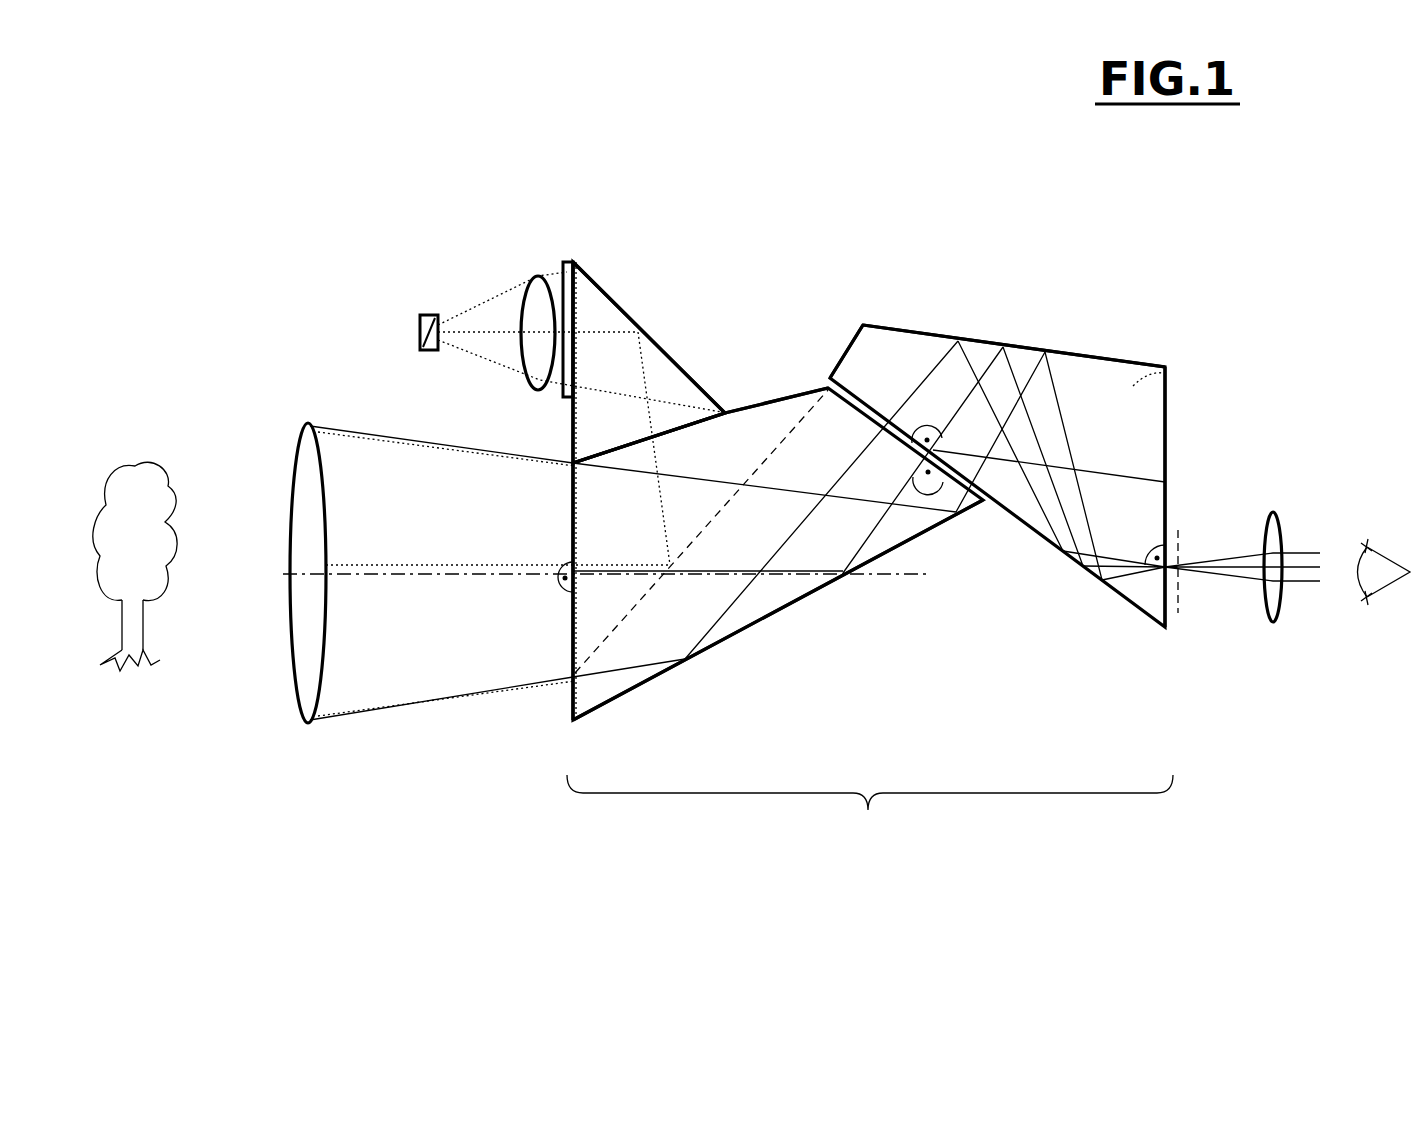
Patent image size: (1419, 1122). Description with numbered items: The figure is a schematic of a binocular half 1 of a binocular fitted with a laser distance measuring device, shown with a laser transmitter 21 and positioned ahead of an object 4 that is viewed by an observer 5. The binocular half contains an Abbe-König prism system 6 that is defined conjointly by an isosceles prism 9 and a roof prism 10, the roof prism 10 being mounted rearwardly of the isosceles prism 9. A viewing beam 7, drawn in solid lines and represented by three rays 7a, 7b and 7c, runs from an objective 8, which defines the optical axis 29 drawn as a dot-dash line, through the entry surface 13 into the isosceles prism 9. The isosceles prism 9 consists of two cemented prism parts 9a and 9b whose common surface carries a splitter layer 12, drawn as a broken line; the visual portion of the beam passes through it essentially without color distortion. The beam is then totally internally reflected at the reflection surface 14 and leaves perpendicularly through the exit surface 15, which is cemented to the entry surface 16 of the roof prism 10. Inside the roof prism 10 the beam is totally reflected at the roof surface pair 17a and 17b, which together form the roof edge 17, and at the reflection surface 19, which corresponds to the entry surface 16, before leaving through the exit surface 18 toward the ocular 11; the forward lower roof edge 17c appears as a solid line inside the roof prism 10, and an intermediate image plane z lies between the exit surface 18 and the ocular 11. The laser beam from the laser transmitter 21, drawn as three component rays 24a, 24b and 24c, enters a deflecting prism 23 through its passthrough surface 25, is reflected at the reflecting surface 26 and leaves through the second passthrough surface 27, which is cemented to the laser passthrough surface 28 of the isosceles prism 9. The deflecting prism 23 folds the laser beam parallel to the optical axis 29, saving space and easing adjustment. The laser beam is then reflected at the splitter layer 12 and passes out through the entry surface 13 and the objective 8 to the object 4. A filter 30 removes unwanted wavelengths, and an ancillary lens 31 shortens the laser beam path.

The binocular half 1 is at (806, 197).
The object 4 is at (134, 697).
The observer 5 is at (1388, 626).
The Abbe-König prism system 6 is at (870, 812).
The viewing beam 7 is at (305, 398).
The ray of the viewing beam 7a is at (350, 445).
The ray of the viewing beam 7b is at (384, 577).
The ray of the viewing beam 7c is at (467, 694).
The objective 8 is at (303, 658).
The isosceles prism 9 is at (786, 643).
The prism part 9a is at (770, 413).
The prism part 9b is at (833, 546).
The roof prism 10 is at (1140, 596).
The ocular 11 is at (1270, 606).
The splitter layer 12 is at (648, 598).
The entry surface 13 is at (573, 518).
The reflection surface 14 is at (618, 698).
The exit surface 15 is at (970, 508).
The entry surface 16 is at (863, 384).
The roof edge 17 is at (1065, 349).
The roof surface 17a is at (1135, 419).
The roof surface 17b is at (1168, 382).
The forward lower roof edge 17c is at (1135, 468).
The exit surface 18 is at (1167, 512).
The reflection surface 19 is at (1113, 593).
The laser transmitter 21 is at (418, 328).
The deflecting prism 23 is at (678, 385).
The component ray of the laser beam 24a is at (475, 347).
The component ray of the laser beam 24b is at (668, 387).
The component ray of the laser beam 24c is at (478, 305).
The passthrough surface 25 is at (573, 433).
The reflecting surface 26 is at (608, 290).
The second passthrough surface 27 is at (680, 426).
The laser passthrough surface 28 is at (700, 422).
The optical axis 29 is at (298, 567).
The filter 30 is at (572, 261).
The ancillary lens 31 is at (540, 290).
The intermediate image plane z is at (1178, 631).